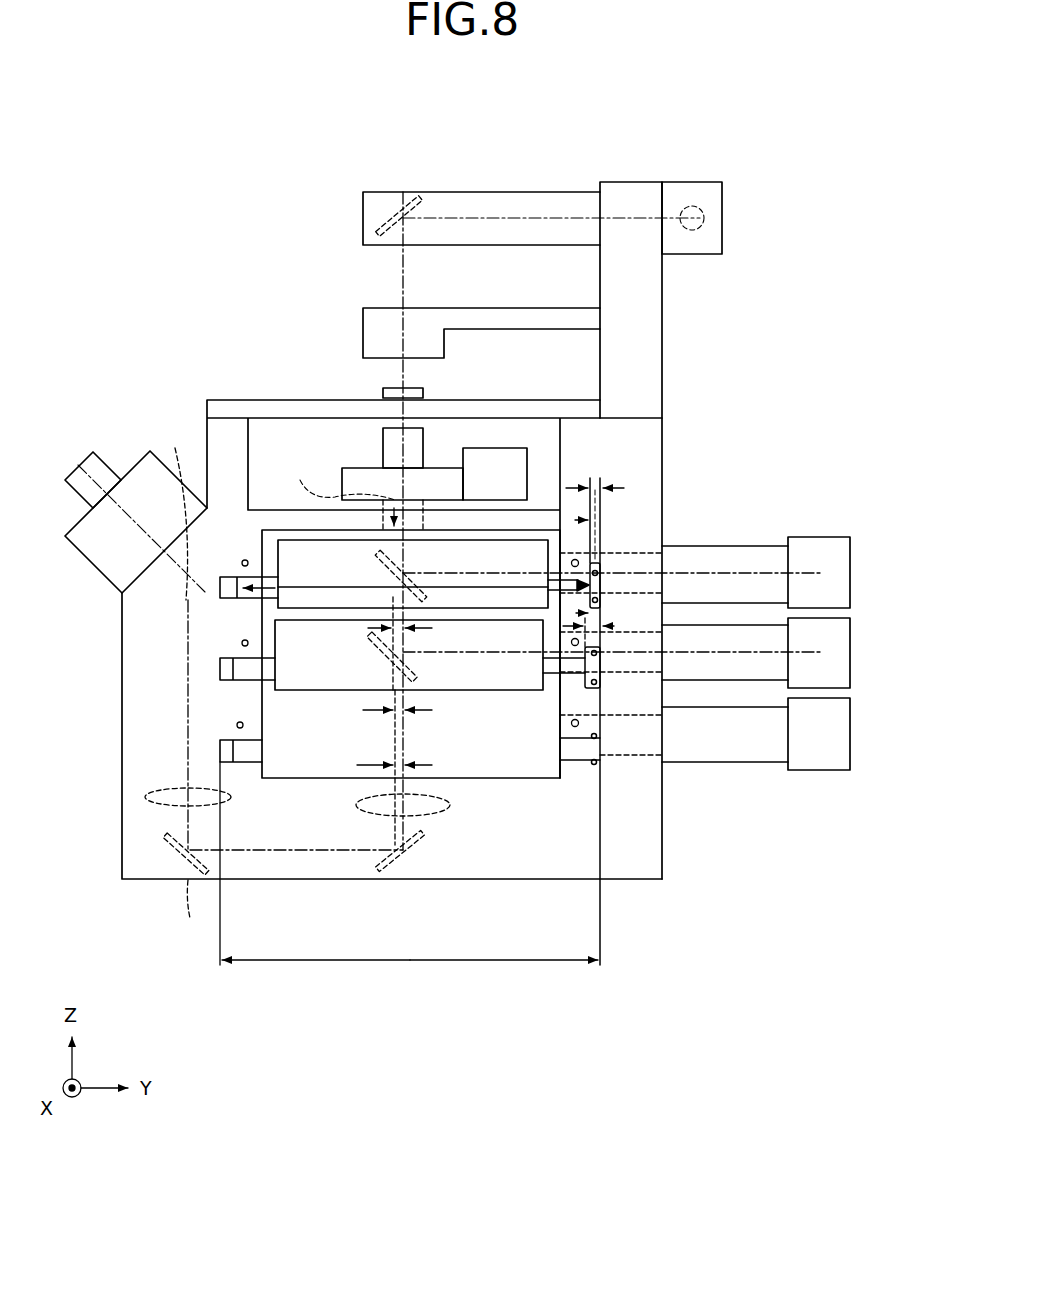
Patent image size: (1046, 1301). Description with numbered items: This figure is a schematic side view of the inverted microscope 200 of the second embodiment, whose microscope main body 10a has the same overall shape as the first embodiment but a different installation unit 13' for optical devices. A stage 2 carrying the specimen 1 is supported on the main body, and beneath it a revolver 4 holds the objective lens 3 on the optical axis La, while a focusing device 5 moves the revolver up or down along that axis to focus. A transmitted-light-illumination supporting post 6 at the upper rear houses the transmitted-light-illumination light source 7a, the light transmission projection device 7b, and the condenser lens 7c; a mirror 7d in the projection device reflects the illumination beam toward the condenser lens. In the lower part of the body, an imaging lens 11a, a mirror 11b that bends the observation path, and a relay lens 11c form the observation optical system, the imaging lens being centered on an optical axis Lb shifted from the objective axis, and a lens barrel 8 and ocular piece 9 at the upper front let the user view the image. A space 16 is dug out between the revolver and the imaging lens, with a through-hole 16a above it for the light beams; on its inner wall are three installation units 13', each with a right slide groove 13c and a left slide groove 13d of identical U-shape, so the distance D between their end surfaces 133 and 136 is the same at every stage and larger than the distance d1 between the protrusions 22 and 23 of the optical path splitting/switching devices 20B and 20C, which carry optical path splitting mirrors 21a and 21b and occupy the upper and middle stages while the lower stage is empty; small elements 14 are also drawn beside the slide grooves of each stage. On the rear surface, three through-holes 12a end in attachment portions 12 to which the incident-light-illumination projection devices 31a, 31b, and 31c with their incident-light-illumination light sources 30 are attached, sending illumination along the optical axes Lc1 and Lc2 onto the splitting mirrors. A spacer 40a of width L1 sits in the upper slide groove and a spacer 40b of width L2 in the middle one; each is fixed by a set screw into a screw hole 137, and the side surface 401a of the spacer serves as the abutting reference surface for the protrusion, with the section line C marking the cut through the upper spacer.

The inverted microscope 200 is at (448, 98).
The specimen 1 is at (380, 390).
The stage 2 is at (233, 404).
The objective lens 3 is at (383, 440).
The revolver 4 is at (345, 480).
The focusing device 5 is at (510, 450).
The transmitted-light-illumination supporting post 6 is at (665, 308).
The transmitted-light-illumination light source 7a is at (722, 210).
The light transmission projection device 7b is at (510, 200).
The condenser lens 7c is at (375, 340).
The mirror 7d is at (402, 190).
The lens barrel 8 is at (73, 545).
The ocular piece 9 is at (108, 470).
The microscope main body 10a is at (122, 683).
The imaging lens 11a is at (435, 802).
The mirror 11b is at (332, 684).
The relay lens 11c is at (140, 797).
The attachment portion 12 is at (665, 560).
The through-hole 12a is at (635, 647).
The installation unit 13' is at (169, 675).
The slide groove 13c is at (556, 612).
The slide groove 13d is at (228, 578).
The screw 14 is at (404, 624).
The space 16 is at (318, 766).
The through-hole 16a is at (339, 478).
The optical path splitting/switching device 20B is at (288, 548).
The optical path splitting/switching device 20C is at (306, 684).
The optical path splitting mirror 21a is at (368, 576).
The optical path splitting mirror 21b is at (364, 657).
The protrusion 22 is at (548, 587).
The protrusion 23 is at (295, 633).
The incident-light-illumination light source 30 is at (850, 548).
The incident-light-illumination projection device 31a is at (743, 532).
The incident-light-illumination projection device 31b is at (762, 621).
The incident-light-illumination projection device 31c is at (756, 695).
The spacer 40a is at (601, 583).
The spacer 40b is at (601, 668).
The end surface 133 is at (611, 797).
The end surface 136 is at (258, 792).
The screw hole 137 is at (600, 740).
The side surface 401a is at (588, 572).
The optical axis La is at (430, 521).
The optical axis Lb is at (362, 831).
The optical axis Lc1 is at (611, 520).
The optical axis Lc2 is at (653, 683).
The width L1 is at (595, 472).
The width L2 is at (601, 625).
The line C- C is at (573, 567).
The distance D is at (409, 863).
The distance d1 is at (273, 572).